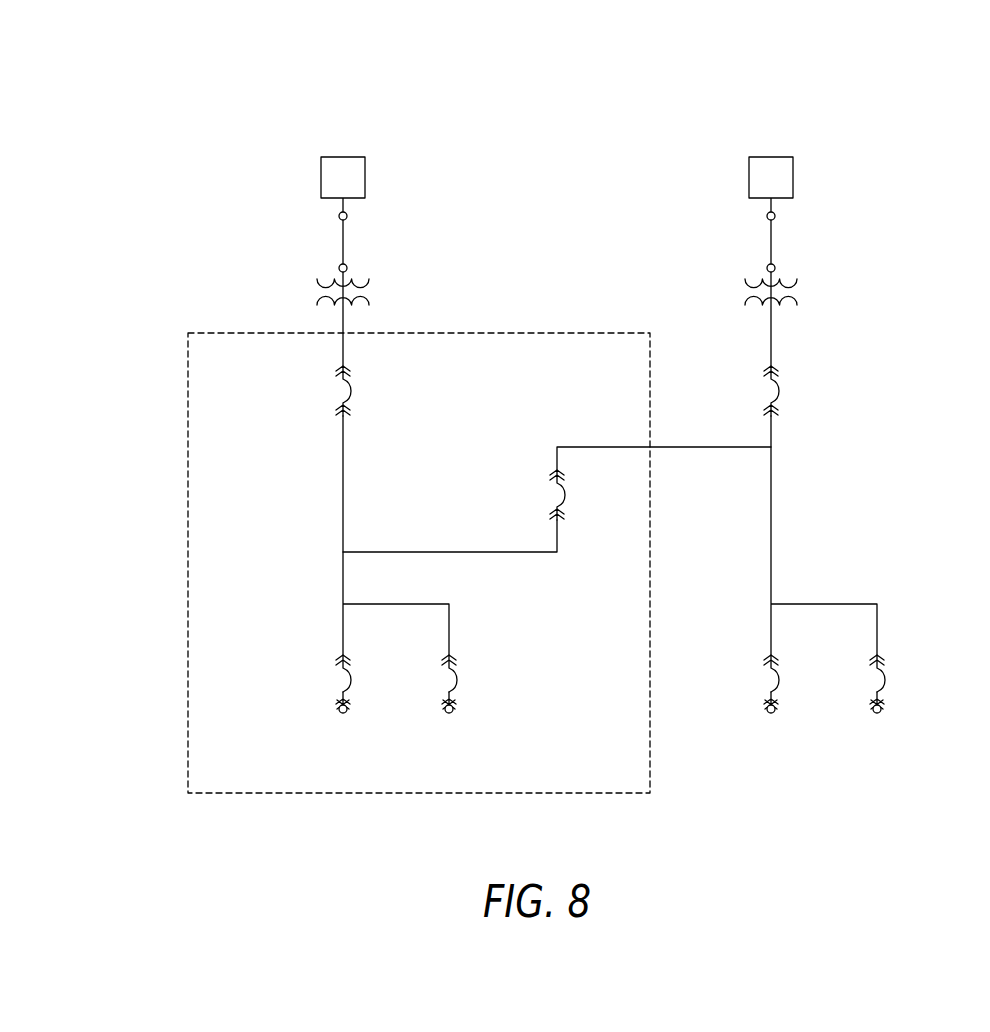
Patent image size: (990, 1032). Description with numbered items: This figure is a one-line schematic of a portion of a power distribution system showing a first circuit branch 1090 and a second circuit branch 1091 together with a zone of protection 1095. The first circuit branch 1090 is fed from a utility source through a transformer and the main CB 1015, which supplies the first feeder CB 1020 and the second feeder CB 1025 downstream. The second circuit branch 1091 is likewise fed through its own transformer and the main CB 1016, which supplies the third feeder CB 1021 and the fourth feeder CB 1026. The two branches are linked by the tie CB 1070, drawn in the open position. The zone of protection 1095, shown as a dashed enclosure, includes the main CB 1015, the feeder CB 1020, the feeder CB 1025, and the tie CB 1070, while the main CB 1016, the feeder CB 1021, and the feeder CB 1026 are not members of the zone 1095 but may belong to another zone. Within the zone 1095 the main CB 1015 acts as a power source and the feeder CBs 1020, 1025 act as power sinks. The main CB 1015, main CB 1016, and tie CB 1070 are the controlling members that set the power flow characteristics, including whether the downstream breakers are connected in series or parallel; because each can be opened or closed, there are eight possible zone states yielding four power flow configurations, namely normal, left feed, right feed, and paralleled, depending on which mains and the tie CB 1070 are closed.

The first circuit branch 1090 is at (275, 96).
The second circuit branch 1091 is at (845, 88).
The first zone of protection 1095 is at (188, 564).
The main-1 CB 1015 is at (340, 392).
The main-2 CB 1016 is at (855, 388).
The tie CB 1070 is at (552, 487).
The feeder-1 CB 1020 is at (345, 678).
The feeder-2 CB 1025 is at (463, 678).
The feeder-3 CB 1021 is at (742, 727).
The feeder-4 CB 1026 is at (903, 728).